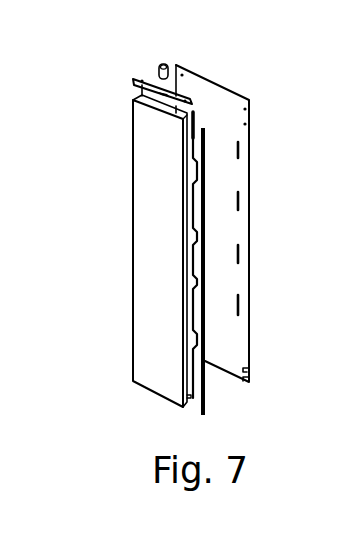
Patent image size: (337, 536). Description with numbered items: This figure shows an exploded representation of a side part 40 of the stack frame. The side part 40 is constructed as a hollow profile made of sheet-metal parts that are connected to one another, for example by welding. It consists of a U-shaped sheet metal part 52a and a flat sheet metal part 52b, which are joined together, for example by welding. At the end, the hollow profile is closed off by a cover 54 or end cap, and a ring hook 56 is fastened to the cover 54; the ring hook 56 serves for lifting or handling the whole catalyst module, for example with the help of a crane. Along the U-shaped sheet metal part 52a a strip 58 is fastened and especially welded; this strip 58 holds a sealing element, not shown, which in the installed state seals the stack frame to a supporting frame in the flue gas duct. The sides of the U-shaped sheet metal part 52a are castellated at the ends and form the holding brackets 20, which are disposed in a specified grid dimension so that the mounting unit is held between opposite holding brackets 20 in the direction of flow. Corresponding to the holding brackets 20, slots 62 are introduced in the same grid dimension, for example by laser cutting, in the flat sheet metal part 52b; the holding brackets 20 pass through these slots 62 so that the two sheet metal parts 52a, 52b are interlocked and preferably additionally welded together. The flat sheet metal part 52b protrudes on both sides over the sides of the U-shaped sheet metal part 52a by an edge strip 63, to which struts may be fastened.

The side part 40 is at (191, 223).
The holding bracket 20 is at (197, 223).
The U-shaped sheet metal part 52a is at (150, 322).
The flat sheet metal part 52b is at (253, 223).
The cover 54 is at (183, 92).
The ring hook 56 is at (164, 63).
The strip 58 is at (205, 397).
The slot 62 is at (238, 151).
The edge strip 63 is at (249, 237).